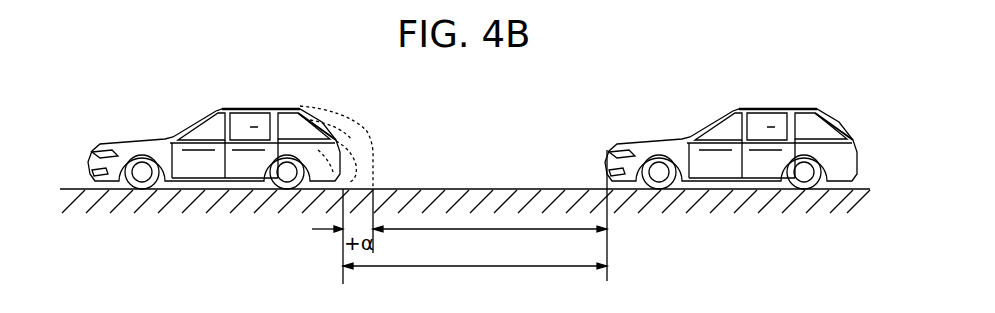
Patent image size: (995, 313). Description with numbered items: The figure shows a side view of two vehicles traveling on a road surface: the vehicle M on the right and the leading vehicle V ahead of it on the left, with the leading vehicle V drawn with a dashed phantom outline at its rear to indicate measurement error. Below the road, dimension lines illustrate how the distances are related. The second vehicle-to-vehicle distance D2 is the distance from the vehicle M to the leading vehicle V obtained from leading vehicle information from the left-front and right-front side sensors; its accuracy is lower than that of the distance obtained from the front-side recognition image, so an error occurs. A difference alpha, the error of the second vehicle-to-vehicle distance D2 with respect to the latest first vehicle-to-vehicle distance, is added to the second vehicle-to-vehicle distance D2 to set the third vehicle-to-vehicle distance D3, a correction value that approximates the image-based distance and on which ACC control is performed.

The leading vehicle V is at (245, 108).
The vehicle M is at (770, 110).
The second vehicle-to-vehicle distance D2 is at (490, 241).
The third vehicle-to-vehicle distance D3 is at (475, 280).